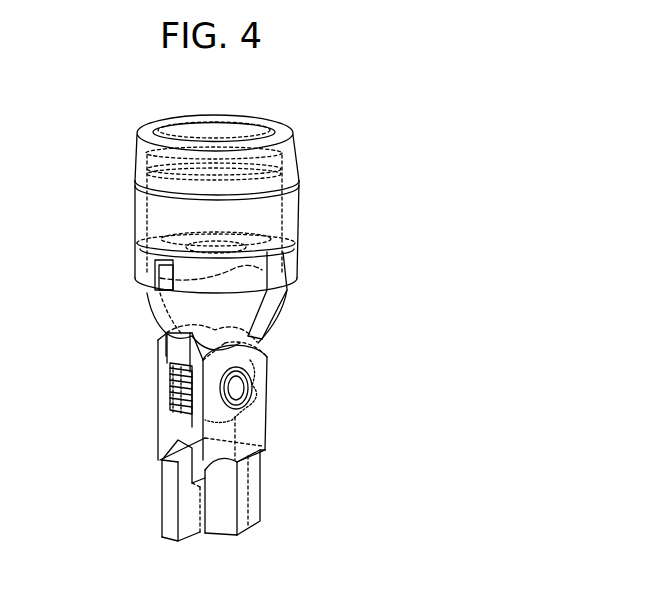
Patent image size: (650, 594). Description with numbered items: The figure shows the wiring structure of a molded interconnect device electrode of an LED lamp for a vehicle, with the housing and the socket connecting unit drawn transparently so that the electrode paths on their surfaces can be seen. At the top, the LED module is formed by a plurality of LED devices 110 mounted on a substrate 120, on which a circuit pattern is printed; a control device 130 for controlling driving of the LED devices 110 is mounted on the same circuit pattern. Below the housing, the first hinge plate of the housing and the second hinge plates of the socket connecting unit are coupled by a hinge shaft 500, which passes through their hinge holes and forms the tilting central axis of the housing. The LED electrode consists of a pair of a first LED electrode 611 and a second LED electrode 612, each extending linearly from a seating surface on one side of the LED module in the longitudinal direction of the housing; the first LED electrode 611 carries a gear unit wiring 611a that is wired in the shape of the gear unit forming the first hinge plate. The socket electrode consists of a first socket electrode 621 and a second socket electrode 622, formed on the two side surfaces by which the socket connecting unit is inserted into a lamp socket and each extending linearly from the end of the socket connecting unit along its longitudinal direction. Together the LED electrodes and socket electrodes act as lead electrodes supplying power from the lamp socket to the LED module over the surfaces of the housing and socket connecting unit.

The LED device 110 is at (227, 247).
The substrate 120 is at (253, 243).
The control device 130 is at (197, 273).
The hinge shaft 500 is at (238, 390).
The first LED electrode 611 is at (157, 303).
The gear unit wiring 611a is at (170, 388).
The second LED electrode 612 is at (280, 307).
The first socket electrode 621 is at (163, 480).
The second socket electrode 622 is at (259, 498).